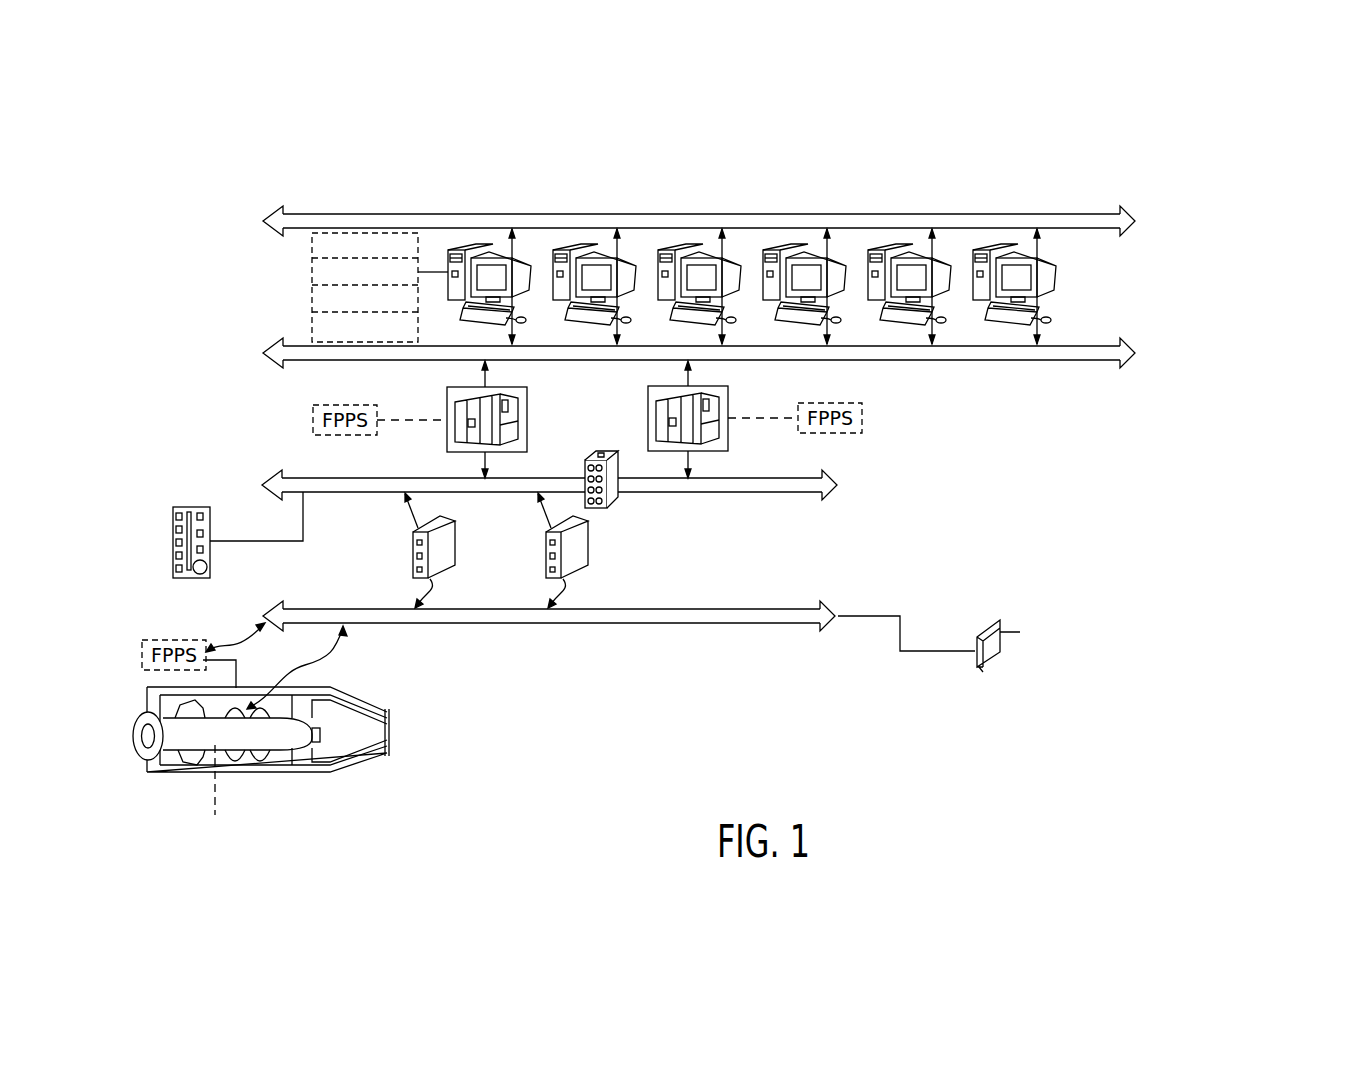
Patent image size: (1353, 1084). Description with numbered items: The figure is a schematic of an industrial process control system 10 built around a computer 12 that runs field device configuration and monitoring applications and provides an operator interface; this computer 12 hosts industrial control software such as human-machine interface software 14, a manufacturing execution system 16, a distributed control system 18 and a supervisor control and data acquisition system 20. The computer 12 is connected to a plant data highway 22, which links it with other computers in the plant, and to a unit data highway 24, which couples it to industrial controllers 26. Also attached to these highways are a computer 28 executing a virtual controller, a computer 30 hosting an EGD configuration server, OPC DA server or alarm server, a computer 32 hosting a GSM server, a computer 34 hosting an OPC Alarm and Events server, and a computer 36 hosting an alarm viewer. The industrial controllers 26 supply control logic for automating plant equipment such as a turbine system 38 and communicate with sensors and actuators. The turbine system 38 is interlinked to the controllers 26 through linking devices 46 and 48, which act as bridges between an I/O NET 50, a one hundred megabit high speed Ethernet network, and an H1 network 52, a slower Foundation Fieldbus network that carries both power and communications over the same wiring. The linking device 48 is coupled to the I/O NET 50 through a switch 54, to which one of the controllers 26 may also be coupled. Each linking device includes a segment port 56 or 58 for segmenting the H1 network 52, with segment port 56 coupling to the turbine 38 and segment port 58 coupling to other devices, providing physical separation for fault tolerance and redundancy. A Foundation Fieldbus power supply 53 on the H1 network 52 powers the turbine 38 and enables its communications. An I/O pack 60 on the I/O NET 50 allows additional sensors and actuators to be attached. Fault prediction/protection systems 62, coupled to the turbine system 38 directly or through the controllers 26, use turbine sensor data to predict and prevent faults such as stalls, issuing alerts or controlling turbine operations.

The industrial process control system 10 is at (1218, 172).
The computer 12 is at (464, 250).
The human-machine interface (HMI) software 14 is at (312, 242).
The manufacturing execution system (MES) 16 is at (312, 270).
The distributed control system (DCS) 18 is at (312, 298).
The supervisor control and data acquisition (SCADA) system 20 is at (312, 324).
The plant data highway 22 is at (1128, 213).
The unit data highway 24 is at (1128, 346).
The industrial controller 26 is at (527, 398).
The computer 28 is at (569, 250).
The computer 30 is at (674, 250).
The computer 32 is at (779, 250).
The computer 34 is at (884, 250).
The computer 36 is at (989, 250).
The turbine system 38 is at (284, 779).
The linking device 46 is at (449, 547).
The linking device 48 is at (582, 547).
The I/O NET 50 is at (834, 490).
The H1 network 52 is at (832, 610).
The Foundation Fieldbus power supply 53 is at (988, 628).
The switch 54 is at (612, 503).
The segment port 56 is at (404, 577).
The segment port 58 is at (537, 577).
The I/O pack 60 is at (190, 507).
The fault prediction/protection system 62 is at (313, 418).